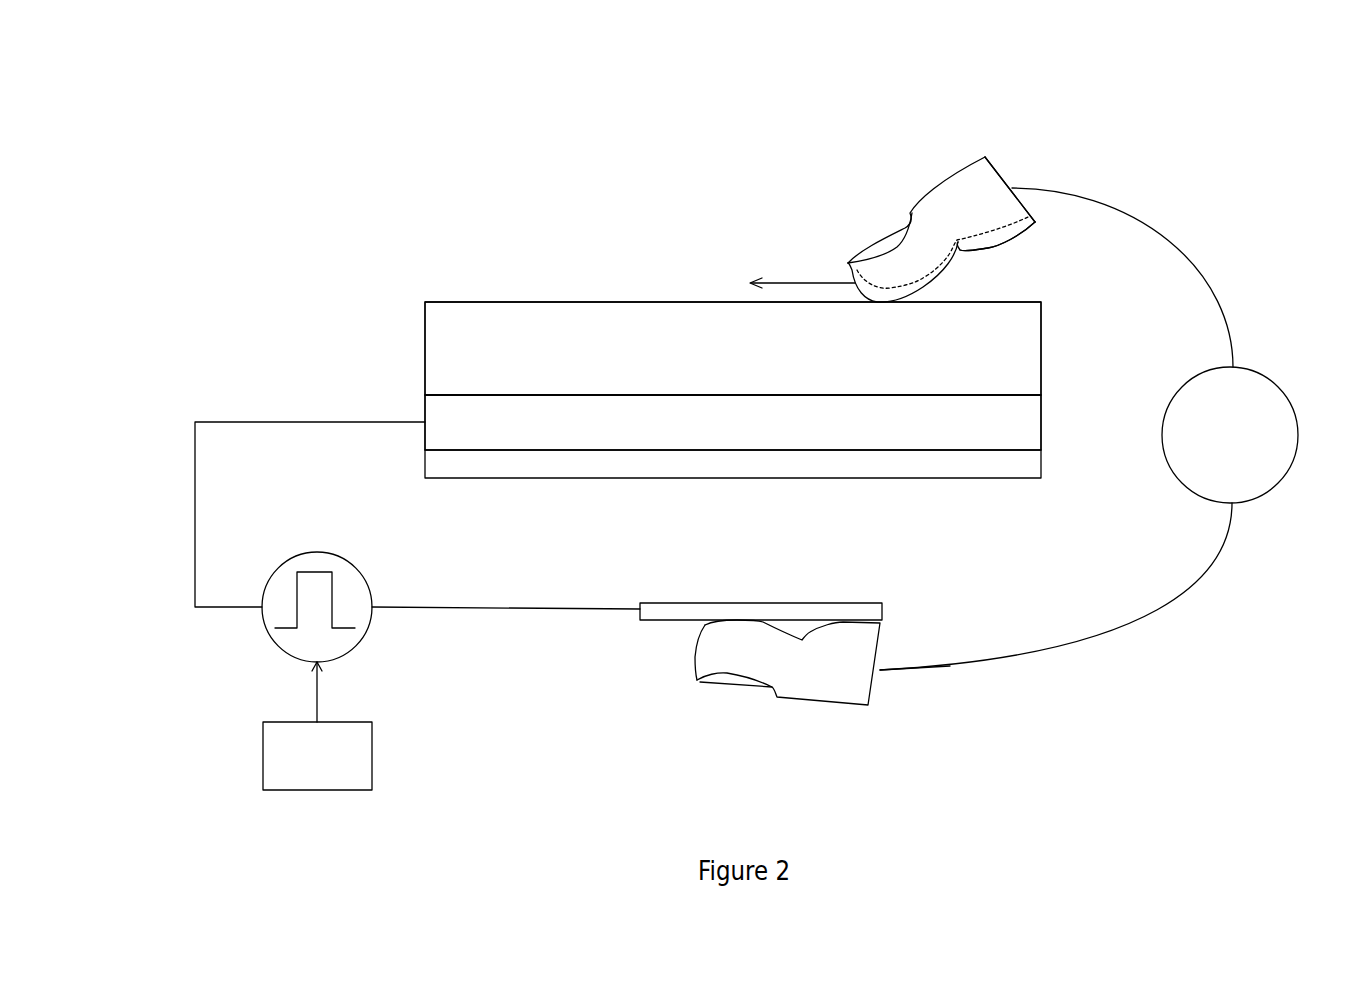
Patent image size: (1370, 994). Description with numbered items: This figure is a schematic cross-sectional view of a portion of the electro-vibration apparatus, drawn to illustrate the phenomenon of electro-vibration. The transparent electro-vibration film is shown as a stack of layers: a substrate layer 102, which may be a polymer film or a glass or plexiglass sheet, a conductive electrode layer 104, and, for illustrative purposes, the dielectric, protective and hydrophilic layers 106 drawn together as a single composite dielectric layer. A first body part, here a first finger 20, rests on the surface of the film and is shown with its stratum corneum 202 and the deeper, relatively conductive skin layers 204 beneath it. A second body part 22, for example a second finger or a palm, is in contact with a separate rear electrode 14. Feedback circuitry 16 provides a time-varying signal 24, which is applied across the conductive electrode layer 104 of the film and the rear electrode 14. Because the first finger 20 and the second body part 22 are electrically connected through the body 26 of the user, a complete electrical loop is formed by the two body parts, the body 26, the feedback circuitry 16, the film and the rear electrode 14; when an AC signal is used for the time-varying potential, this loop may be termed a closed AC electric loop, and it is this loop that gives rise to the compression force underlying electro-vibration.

The first finger 20 is at (1010, 175).
The deeper relatively conductive skin layers 204 is at (973, 195).
The stratum corneum 202 is at (1028, 241).
The dielectric layer 106 is at (462, 302).
The conductive electrode layer 104 is at (438, 423).
The substrate layer 102 is at (669, 383).
The body 26 is at (1298, 438).
The time-varying signal 24 is at (263, 627).
The feedback circuitry 16 is at (330, 792).
The rear electrode 14 is at (677, 620).
The second body part 22 is at (850, 707).